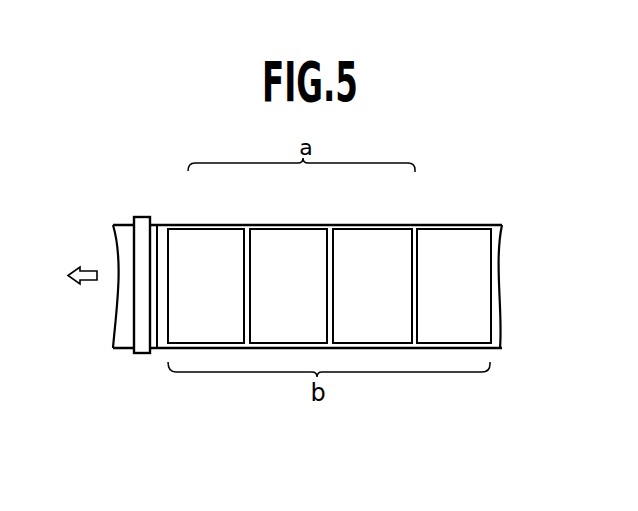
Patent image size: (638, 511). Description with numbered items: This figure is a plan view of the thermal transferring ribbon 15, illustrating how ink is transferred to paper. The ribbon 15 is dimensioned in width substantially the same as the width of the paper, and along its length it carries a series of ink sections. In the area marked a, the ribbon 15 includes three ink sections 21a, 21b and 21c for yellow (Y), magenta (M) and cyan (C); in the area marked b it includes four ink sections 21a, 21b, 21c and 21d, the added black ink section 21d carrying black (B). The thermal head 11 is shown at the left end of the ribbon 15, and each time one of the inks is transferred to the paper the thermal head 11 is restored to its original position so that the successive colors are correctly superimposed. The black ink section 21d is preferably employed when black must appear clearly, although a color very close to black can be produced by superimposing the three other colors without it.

The thermal head 11 is at (145, 308).
The thermal transferring ribbon 15 is at (419, 227).
The ink section 21a is at (215, 233).
The ink section 21b is at (293, 233).
The ink section 21c is at (372, 233).
The black ink section 21d is at (468, 236).